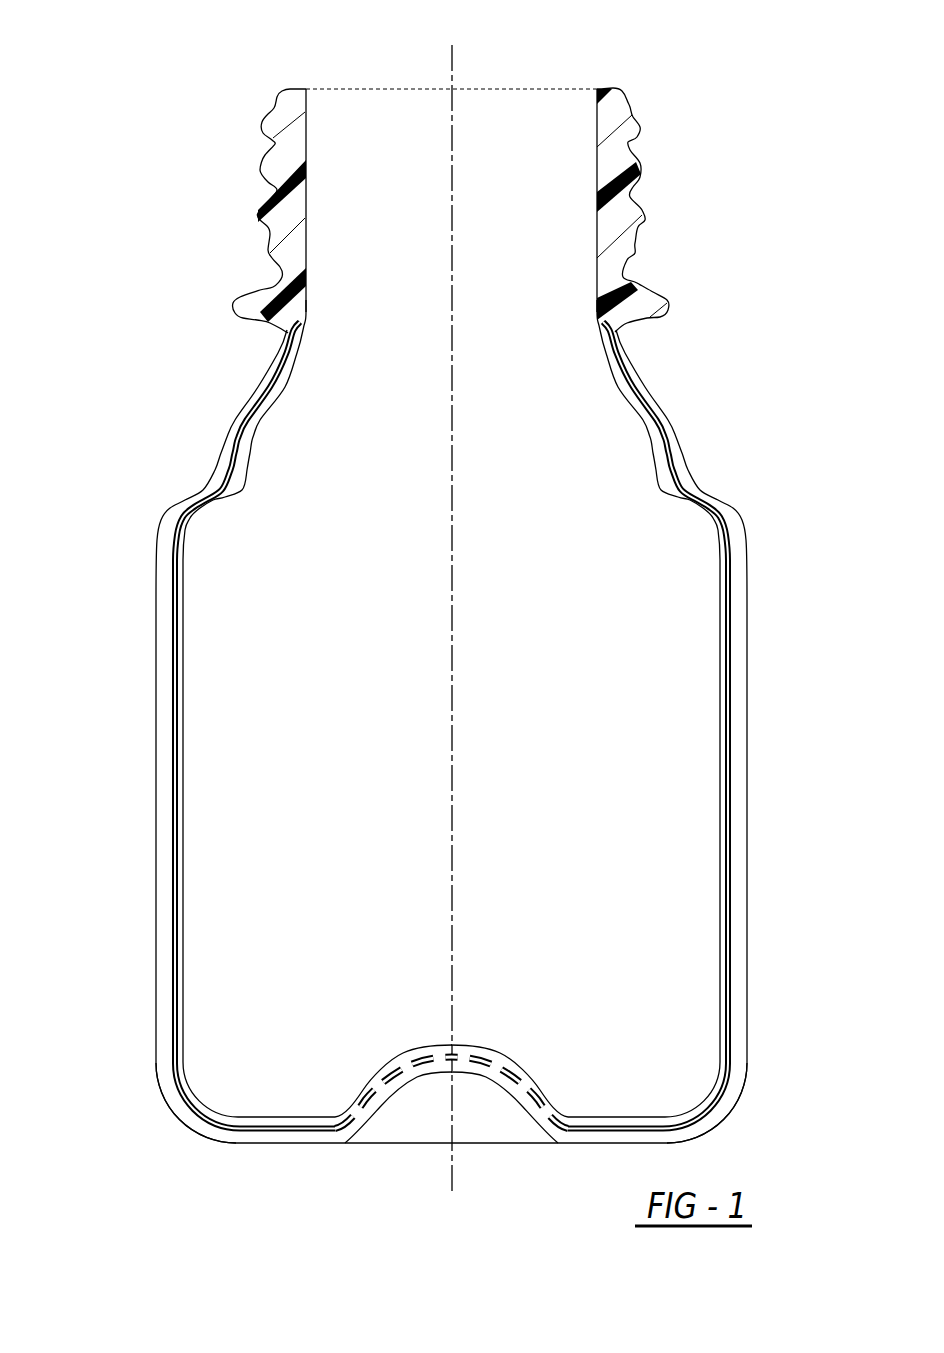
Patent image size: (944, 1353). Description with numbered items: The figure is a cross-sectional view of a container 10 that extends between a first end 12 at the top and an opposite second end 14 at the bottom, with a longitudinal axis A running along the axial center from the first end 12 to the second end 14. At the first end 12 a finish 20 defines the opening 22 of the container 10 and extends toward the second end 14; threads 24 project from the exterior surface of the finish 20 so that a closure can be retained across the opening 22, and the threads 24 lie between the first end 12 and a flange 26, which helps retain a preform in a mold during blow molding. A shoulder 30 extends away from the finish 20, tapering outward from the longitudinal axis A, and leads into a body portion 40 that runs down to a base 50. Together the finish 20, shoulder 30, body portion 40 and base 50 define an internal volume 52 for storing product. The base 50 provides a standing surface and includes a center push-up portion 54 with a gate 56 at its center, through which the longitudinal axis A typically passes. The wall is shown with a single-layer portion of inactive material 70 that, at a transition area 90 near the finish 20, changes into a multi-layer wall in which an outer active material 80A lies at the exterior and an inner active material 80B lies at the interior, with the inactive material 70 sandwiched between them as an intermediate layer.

The container 10 is at (98, 170).
The first end 12 is at (280, 92).
The second end 14 is at (308, 1143).
The finish 20 is at (272, 142).
The opening 22 is at (593, 118).
The threads 24 is at (258, 218).
The flange 26 is at (235, 302).
The shoulder 30 is at (245, 402).
The body portion 40 is at (156, 673).
The base 50 is at (257, 1143).
The internal volume 52 is at (235, 837).
The center push-up portion 54 is at (430, 1073).
The gate 56 is at (477, 1073).
The inactive material 70 is at (612, 155).
The outer active material 80A is at (745, 783).
The inner active material 80B is at (713, 947).
The transition area 90 is at (617, 332).
The longitudinal axis A is at (453, 60).